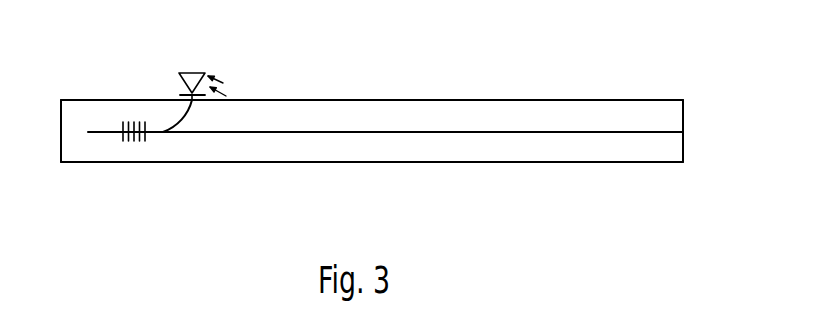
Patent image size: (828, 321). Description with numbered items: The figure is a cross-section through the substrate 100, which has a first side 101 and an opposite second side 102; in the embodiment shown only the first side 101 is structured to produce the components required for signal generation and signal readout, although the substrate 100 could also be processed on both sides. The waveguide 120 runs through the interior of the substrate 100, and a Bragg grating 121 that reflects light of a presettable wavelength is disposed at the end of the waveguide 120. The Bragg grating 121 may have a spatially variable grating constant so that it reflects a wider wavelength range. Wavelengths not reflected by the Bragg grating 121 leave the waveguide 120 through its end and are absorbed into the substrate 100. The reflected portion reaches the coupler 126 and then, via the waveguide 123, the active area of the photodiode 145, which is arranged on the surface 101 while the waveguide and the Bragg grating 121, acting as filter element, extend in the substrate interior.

The substrate 100 is at (683, 148).
The first side 101 is at (622, 99).
The second side 102 is at (623, 163).
The waveguide 120 is at (293, 133).
The Bragg grating 121 is at (130, 142).
The waveguide 123 is at (177, 120).
The coupler 126 is at (175, 133).
The photodiode 145 is at (192, 73).